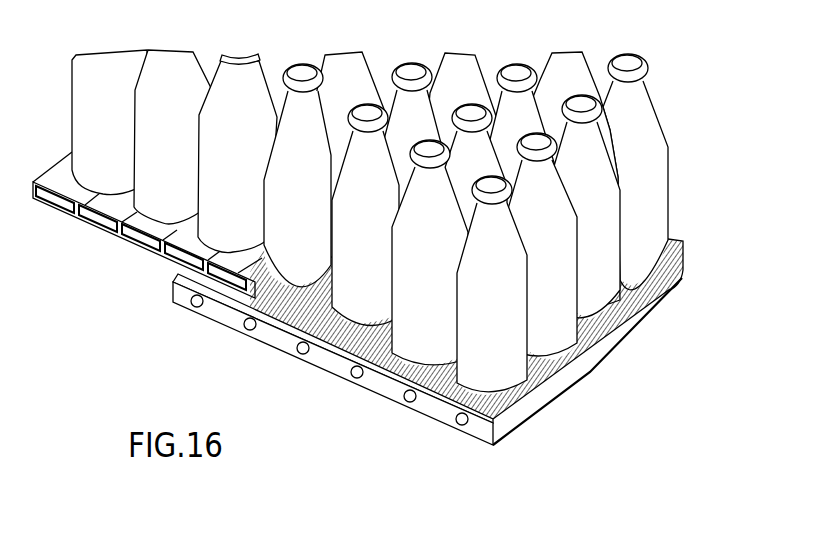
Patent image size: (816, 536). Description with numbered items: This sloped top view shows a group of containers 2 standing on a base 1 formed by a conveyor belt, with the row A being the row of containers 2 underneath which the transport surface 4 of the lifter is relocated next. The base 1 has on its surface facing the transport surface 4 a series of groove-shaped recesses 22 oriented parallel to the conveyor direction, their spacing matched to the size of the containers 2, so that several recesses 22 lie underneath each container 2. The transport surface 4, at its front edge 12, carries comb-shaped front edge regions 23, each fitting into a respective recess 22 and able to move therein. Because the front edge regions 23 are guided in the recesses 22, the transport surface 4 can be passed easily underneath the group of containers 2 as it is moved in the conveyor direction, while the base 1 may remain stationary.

The base 1 is at (484, 437).
The containers 2 is at (385, 262).
The transport surface 4 is at (54, 214).
The front edge 12 is at (333, 359).
The groove-shaped recesses 22 is at (508, 418).
The comb-shaped front edge regions 23 is at (348, 347).
The row of containers A is at (413, 297).